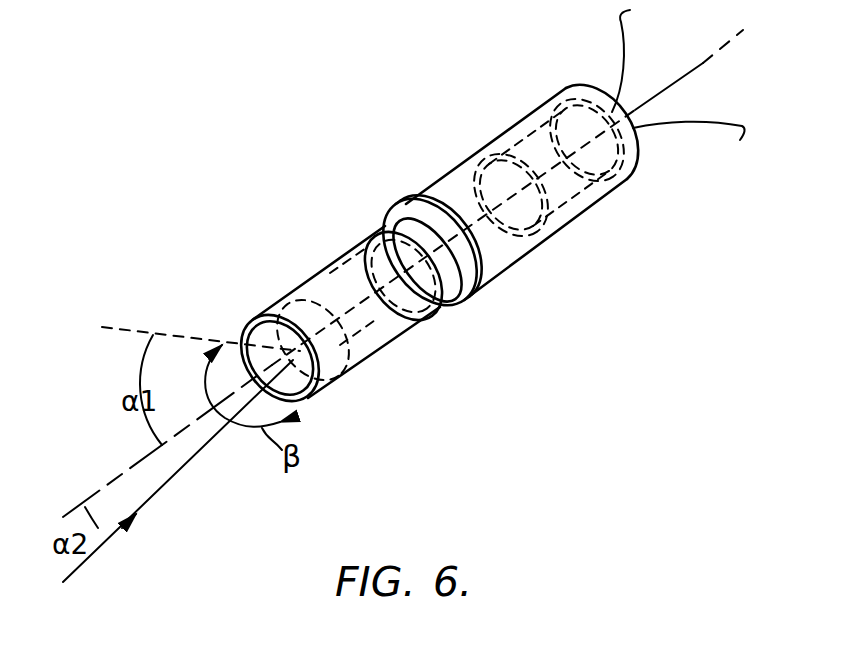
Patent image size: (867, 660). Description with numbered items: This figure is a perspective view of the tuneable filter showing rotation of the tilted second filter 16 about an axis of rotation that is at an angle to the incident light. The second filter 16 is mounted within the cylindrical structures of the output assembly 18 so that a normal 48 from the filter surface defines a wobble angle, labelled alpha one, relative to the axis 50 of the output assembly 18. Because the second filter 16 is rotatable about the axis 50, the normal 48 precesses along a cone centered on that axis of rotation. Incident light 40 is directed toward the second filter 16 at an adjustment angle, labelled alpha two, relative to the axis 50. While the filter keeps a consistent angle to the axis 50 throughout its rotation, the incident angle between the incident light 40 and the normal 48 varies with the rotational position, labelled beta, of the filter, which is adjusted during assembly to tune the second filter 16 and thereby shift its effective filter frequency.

The second filter 16 is at (300, 400).
The output assembly 18 is at (479, 149).
The incident light 40 is at (88, 558).
The normal 48 is at (172, 332).
The axis 50 is at (703, 63).